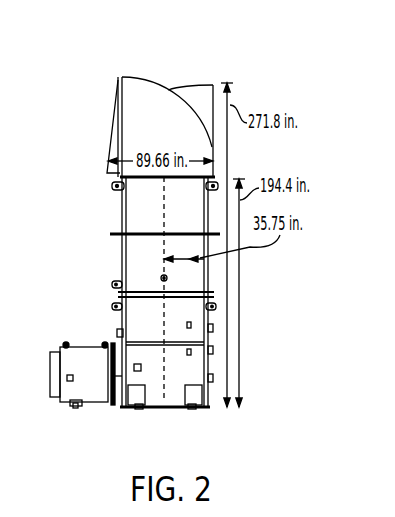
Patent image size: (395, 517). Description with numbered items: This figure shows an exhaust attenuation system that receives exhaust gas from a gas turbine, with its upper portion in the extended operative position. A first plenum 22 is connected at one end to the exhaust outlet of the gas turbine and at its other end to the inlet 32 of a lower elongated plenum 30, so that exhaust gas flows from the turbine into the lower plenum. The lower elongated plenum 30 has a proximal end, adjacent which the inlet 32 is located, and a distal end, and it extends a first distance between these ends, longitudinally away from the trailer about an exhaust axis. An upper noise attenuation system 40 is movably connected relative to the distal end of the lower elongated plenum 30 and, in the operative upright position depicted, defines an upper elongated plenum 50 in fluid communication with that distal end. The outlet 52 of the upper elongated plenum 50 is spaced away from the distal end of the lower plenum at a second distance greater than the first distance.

The first plenum 22 is at (87, 407).
The lower elongated plenum 30 is at (115, 211).
The inlet 32 is at (117, 322).
The upper noise attenuation system 40 is at (100, 114).
The upper elongated plenum 50 is at (173, 66).
The outlet 52 is at (136, 88).